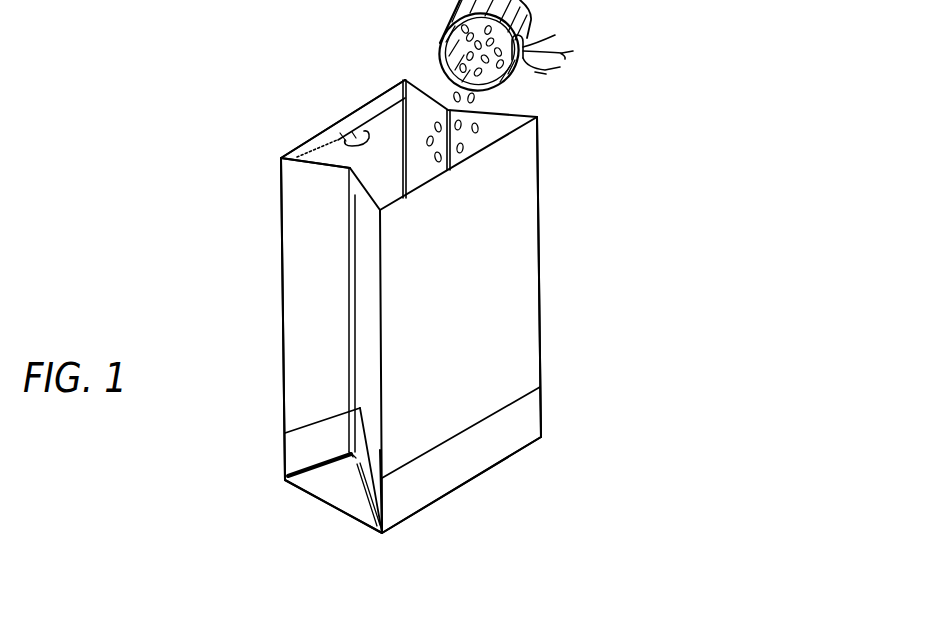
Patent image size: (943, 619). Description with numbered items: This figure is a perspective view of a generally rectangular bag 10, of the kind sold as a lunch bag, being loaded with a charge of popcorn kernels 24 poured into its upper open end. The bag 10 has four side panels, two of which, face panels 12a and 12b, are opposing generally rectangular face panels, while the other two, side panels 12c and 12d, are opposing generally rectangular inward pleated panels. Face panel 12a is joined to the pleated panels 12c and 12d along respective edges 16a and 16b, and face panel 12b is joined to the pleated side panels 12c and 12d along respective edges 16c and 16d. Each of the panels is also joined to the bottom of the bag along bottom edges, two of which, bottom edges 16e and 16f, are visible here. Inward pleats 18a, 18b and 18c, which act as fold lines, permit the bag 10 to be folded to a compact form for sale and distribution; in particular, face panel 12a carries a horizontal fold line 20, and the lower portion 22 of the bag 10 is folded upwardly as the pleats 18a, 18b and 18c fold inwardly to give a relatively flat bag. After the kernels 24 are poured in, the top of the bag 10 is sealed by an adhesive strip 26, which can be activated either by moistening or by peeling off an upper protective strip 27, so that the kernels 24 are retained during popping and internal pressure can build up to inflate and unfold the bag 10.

The bag 10 is at (230, 432).
The face panel 12a is at (528, 203).
The face panel 12b is at (375, 125).
The inward pleated side panel 12c is at (293, 311).
The inward pleated side panel 12d is at (517, 113).
The edge 16a is at (383, 453).
The edge 16b is at (541, 248).
The edge 16c is at (282, 248).
The edge 16d is at (396, 88).
The bottom edge 16e is at (534, 443).
The bottom edge 16f is at (325, 502).
The inward pleat 18a is at (352, 291).
The inward pleat 18b is at (308, 478).
The inward pleat 18c is at (368, 502).
The horizontal fold line 20 is at (541, 396).
The lower portion 22 is at (440, 480).
The popcorn kernels 24 is at (452, 100).
The adhesive strip 26 is at (295, 153).
The upper protective strip 27 is at (328, 138).